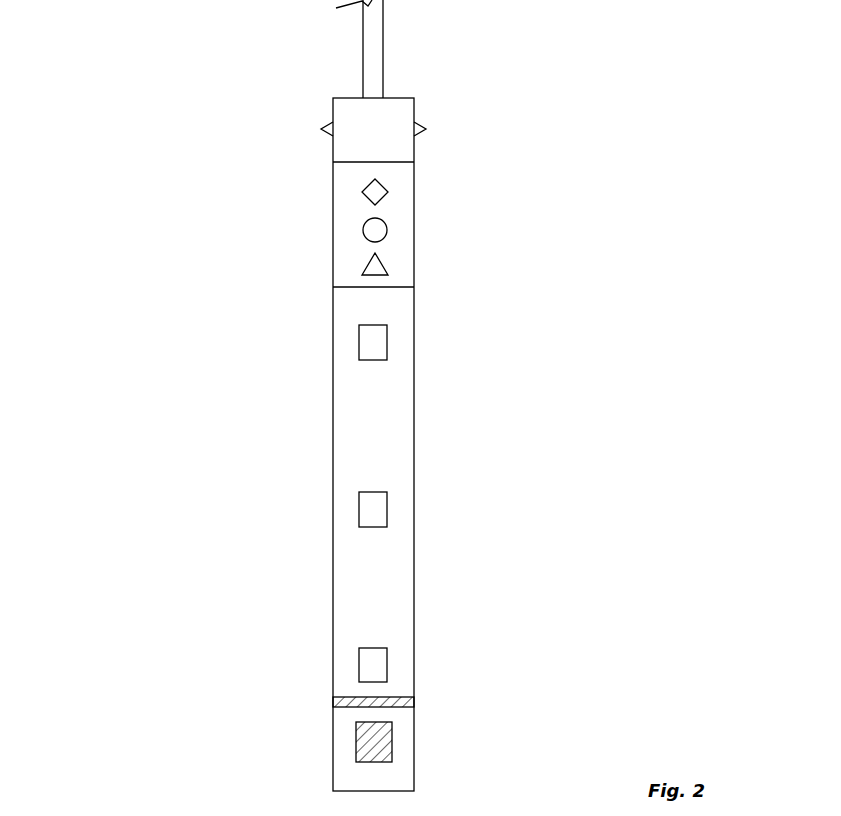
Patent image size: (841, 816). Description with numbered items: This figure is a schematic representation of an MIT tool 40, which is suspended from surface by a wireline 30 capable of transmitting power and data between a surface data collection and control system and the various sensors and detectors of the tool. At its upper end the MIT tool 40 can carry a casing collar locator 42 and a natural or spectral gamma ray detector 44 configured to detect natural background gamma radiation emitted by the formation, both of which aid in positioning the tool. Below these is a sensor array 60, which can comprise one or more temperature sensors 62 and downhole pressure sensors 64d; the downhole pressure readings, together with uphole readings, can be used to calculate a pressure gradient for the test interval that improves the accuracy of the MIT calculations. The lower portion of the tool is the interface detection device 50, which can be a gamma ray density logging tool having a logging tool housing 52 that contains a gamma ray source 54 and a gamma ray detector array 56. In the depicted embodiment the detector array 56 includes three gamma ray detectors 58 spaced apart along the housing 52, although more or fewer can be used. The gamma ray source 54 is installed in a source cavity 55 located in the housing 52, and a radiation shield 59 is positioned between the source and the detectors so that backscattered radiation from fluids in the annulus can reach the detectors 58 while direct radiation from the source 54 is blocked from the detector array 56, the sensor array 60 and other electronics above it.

The wireline 30 is at (383, 34).
The MIT tool 40 is at (172, 230).
The casing collar locator 42 is at (426, 131).
The gamma ray detector 44 is at (362, 192).
The interface detection device 50 is at (333, 358).
The logging tool housing 52 is at (353, 598).
The gamma ray source 54 is at (375, 745).
The source cavity 55 is at (392, 735).
The gamma ray detector array 56 is at (424, 326).
The gamma ray detector 58 is at (363, 345).
The radiation shield 59 is at (414, 705).
The sensor array 60 is at (414, 258).
The temperature sensor 62 is at (363, 230).
The downhole pressure sensor 64d is at (365, 271).